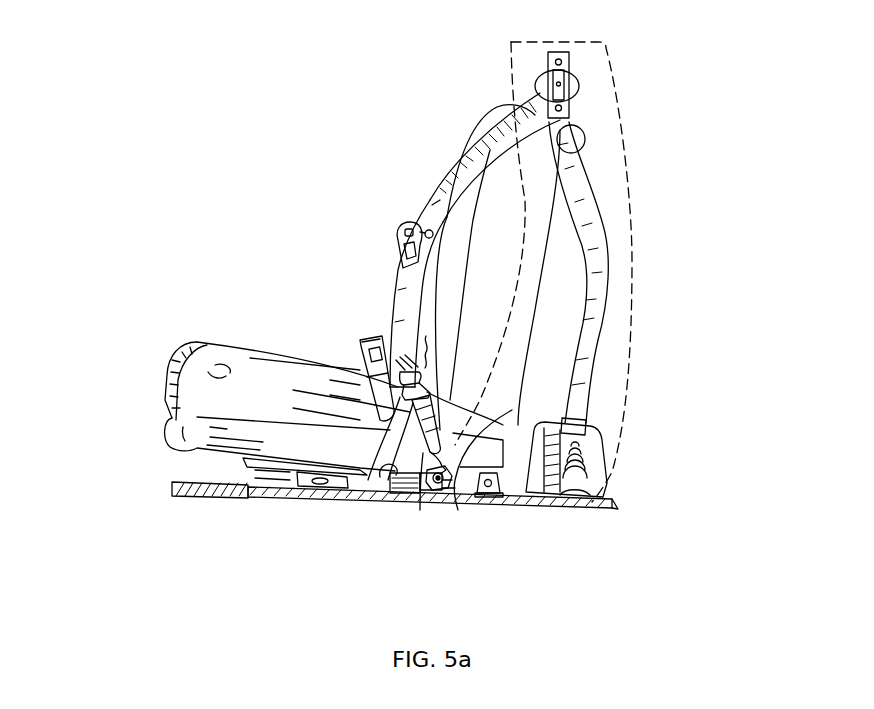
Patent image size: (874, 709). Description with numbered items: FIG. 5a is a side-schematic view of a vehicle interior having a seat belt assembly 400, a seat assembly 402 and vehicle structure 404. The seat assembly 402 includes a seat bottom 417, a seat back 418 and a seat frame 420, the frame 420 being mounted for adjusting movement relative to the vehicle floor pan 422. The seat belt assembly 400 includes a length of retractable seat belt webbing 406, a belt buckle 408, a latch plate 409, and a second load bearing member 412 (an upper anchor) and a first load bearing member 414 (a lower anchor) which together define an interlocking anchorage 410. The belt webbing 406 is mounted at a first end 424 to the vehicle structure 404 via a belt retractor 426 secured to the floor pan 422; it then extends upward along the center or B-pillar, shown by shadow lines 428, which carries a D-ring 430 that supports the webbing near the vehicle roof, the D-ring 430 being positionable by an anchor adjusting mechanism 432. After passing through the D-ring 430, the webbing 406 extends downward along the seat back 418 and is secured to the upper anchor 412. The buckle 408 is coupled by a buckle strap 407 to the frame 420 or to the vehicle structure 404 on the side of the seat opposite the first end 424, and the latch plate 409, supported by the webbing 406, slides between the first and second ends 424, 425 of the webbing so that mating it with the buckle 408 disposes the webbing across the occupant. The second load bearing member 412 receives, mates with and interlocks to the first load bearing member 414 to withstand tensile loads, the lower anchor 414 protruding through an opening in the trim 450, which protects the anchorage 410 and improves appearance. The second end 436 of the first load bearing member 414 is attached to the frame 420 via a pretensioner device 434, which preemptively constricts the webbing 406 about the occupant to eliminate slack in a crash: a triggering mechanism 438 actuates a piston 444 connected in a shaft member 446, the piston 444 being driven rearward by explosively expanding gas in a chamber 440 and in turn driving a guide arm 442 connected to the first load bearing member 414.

The seat belt assembly 400 is at (383, 228).
The seat assembly 402 is at (226, 251).
The vehicle structure 404 is at (167, 457).
The seat belt webbing 406 is at (461, 157).
The buckle strap 407 is at (347, 410).
The belt buckle 408 is at (378, 342).
The latch plate 409 is at (414, 203).
The interlocking anchorage 410 is at (480, 460).
The second load bearing member 412 is at (377, 480).
The first load bearing member 414 is at (466, 410).
The seat bottom 417 is at (233, 382).
The seat back 418 is at (500, 197).
The seat frame 420 is at (262, 485).
The vehicle floor pan 422 is at (172, 483).
The first end of the belt webbing 424 is at (660, 385).
The second end of the belt webbing 425 is at (442, 334).
The belt retractor 426 is at (593, 477).
The B-pillar shadow lines 428 is at (630, 229).
The D-ring 430 is at (578, 84).
The anchor adjusting mechanism 432 is at (570, 62).
The pretensioner device 434 is at (362, 448).
The second end of the first load bearing member 436 is at (461, 484).
The triggering mechanism 438 is at (375, 482).
The chamber 440 is at (390, 484).
The guide arm 442 is at (436, 494).
The piston 444 is at (425, 490).
The shaft member 446 is at (332, 480).
The trim 450 is at (432, 498).